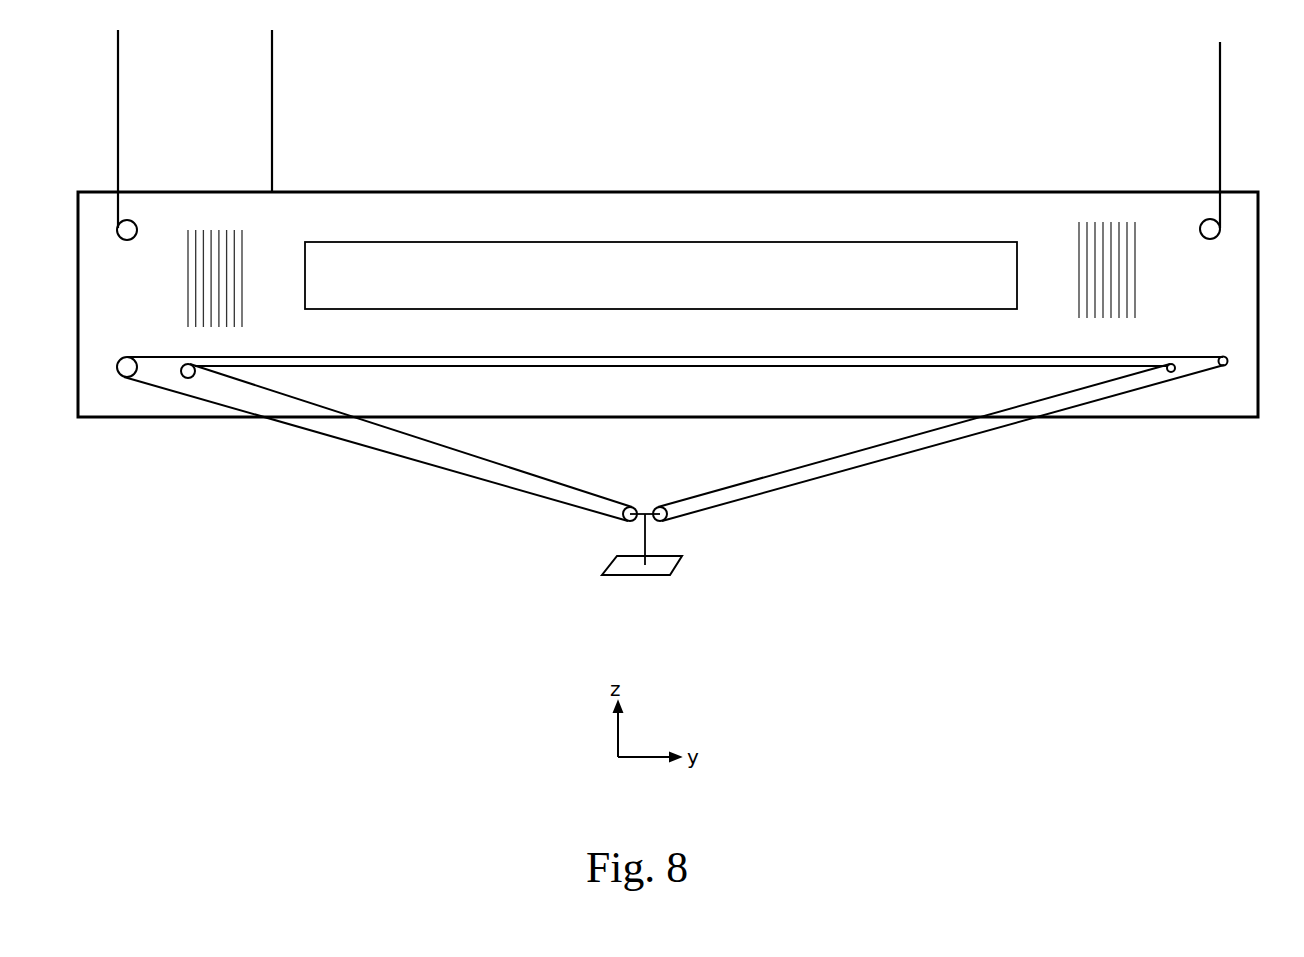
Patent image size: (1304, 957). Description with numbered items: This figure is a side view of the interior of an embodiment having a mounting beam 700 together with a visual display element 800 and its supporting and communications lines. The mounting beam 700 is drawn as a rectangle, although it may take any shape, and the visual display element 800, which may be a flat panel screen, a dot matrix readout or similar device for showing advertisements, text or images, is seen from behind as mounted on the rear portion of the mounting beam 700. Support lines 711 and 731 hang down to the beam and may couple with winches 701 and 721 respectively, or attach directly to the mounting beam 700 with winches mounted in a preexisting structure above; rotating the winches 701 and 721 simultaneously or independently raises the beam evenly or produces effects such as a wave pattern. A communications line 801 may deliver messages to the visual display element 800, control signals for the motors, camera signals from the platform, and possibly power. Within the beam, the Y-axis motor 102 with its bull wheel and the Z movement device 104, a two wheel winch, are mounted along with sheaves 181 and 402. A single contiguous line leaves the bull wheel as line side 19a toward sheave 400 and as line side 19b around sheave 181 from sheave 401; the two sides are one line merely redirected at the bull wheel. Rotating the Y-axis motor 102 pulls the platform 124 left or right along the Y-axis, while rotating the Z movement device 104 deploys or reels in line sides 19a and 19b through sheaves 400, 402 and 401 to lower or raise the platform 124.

The mounting beam 700 is at (440, 186).
The visual display element 800 is at (604, 233).
The support line 731 is at (134, 67).
The communications line 801 is at (283, 90).
The support line 711 is at (1216, 58).
The winch 721 is at (135, 212).
The winch 701 is at (1203, 209).
The Y-axis motor 102 is at (129, 356).
The Z movement device 104 is at (198, 374).
The sheave 181 is at (1219, 356).
The sheave 402 is at (1150, 373).
The line side 19a is at (452, 457).
The line side 19b is at (950, 465).
The sheave 400 is at (627, 500).
The sheave 401 is at (667, 500).
The platform 124 is at (695, 569).